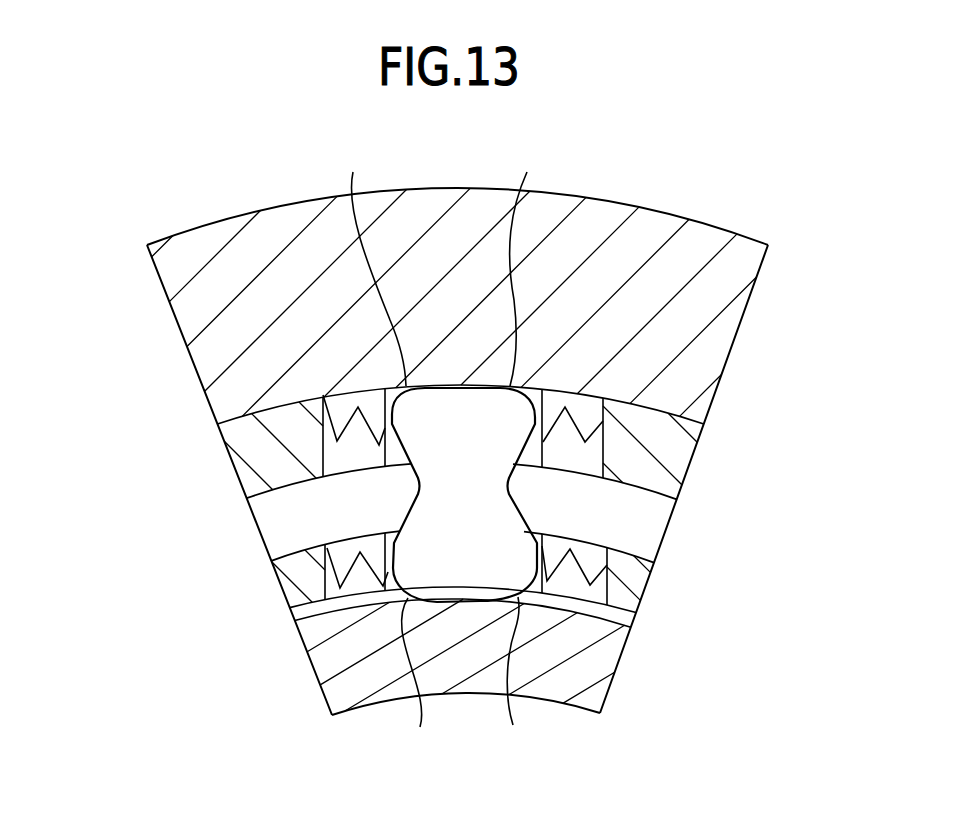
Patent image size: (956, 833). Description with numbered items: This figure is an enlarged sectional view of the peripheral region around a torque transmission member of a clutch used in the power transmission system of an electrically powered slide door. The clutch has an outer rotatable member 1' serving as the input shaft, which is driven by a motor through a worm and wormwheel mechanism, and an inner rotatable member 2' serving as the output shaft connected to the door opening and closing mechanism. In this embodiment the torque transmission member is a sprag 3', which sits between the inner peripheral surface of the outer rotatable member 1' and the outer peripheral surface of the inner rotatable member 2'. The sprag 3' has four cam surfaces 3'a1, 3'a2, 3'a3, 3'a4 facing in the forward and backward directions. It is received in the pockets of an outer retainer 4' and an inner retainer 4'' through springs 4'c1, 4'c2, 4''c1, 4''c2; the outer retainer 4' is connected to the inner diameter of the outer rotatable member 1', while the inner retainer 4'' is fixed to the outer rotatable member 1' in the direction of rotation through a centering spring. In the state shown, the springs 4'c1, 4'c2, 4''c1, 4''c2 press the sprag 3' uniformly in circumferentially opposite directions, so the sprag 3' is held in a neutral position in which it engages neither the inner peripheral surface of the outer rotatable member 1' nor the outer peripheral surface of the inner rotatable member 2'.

The outer rotatable member 1' is at (436, 301).
The inner rotatable member 2' is at (427, 657).
The sprag 3' is at (421, 495).
The cam surface 3'a1 is at (366, 263).
The cam surface 3'a2 is at (538, 263).
The cam surface 3'a3 is at (409, 680).
The cam surface 3'a4 is at (519, 679).
The outer retainer 4' is at (363, 433).
The spring 4'c1 is at (208, 424).
The spring 4'c2 is at (707, 423).
The inner retainer 4'' is at (407, 573).
The spring 4''c1 is at (262, 602).
The spring 4''c2 is at (657, 615).